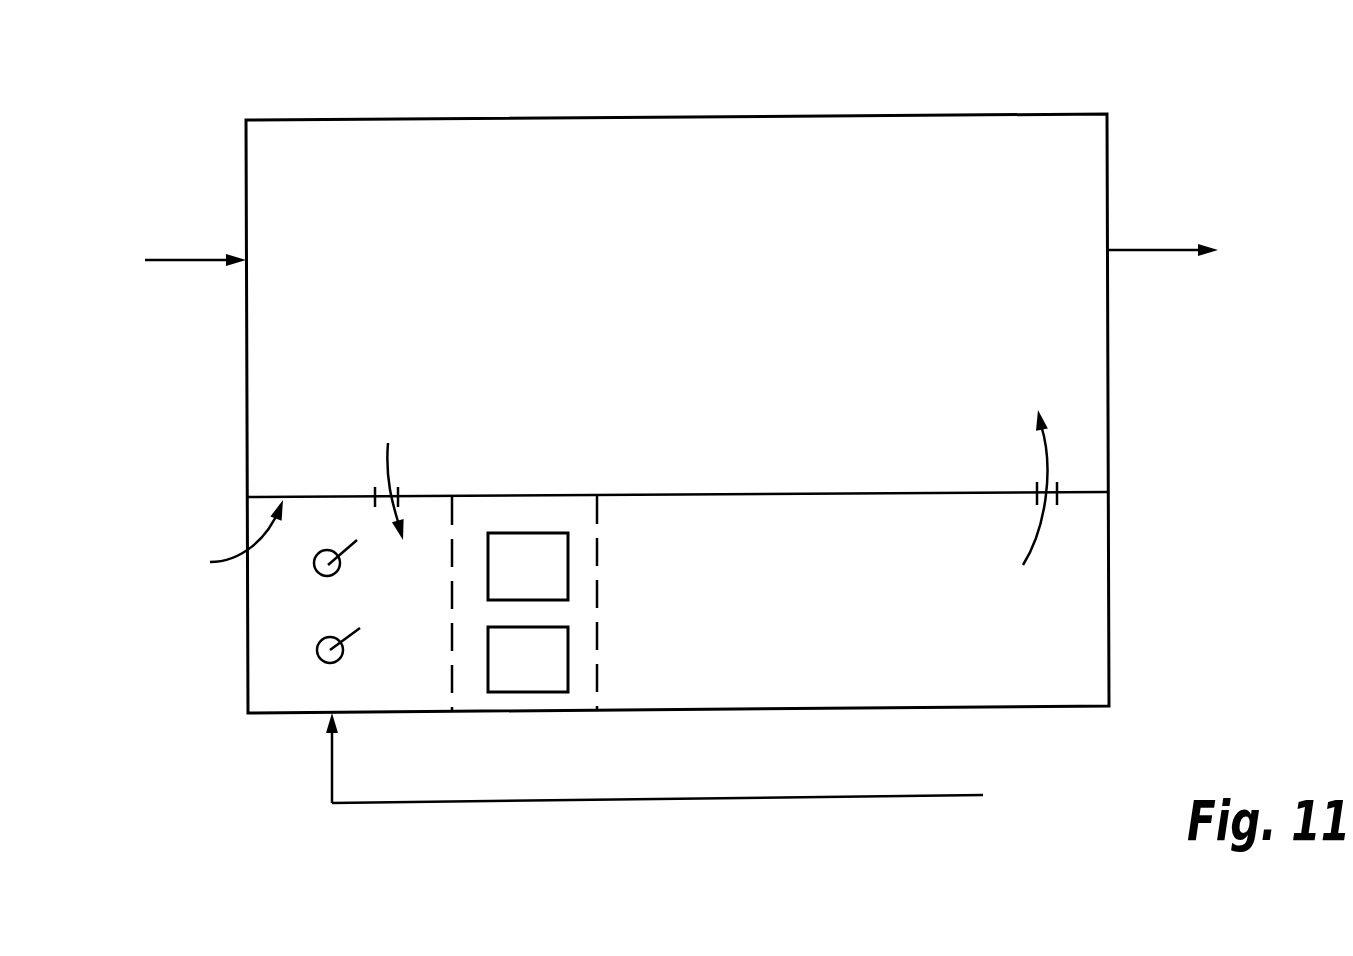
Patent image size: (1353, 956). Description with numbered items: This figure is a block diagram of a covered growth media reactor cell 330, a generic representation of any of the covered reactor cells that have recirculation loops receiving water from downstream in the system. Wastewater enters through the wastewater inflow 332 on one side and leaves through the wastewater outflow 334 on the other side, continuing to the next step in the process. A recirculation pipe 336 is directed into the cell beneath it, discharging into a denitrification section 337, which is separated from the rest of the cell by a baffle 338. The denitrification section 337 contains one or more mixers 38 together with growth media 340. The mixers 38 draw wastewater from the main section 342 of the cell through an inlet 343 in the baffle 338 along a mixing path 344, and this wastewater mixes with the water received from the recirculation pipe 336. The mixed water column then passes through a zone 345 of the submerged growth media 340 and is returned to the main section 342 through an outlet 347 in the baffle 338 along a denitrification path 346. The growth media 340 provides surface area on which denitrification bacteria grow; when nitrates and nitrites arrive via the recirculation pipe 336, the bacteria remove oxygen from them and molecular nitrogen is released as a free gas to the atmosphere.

The growth media reactor cell 330 is at (655, 102).
The wastewater inflow 332 is at (187, 258).
The wastewater outflow 334 is at (1145, 250).
The recirculation pipe 336 is at (643, 800).
The denitrification section 337 is at (912, 611).
The baffle 338 is at (215, 543).
The mixers 38 is at (328, 637).
The growth media 340 is at (568, 570).
The main section 342 is at (728, 280).
The inlet 343 is at (372, 493).
The mixing path 344 is at (388, 465).
The zone 345 is at (542, 508).
The denitrification path 346 is at (1035, 540).
The outlet 347 is at (1063, 485).